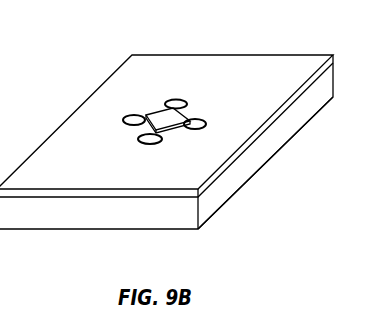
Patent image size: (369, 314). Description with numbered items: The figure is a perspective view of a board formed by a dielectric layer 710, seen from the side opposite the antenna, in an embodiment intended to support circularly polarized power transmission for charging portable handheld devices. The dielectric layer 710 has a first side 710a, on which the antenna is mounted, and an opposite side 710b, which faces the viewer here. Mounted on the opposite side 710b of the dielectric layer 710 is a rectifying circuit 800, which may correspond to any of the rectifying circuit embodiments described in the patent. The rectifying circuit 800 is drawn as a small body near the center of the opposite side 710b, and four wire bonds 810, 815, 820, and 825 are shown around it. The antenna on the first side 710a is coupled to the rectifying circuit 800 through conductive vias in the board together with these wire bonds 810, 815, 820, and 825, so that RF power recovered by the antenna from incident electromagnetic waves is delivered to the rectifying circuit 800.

The dielectric layer 710 is at (93, 219).
The first side 710a is at (254, 177).
The opposite side 710b is at (267, 65).
The rectifying circuit 800 is at (177, 134).
The wire bond 810 is at (137, 116).
The wire bond 815 is at (178, 101).
The wire bond 820 is at (204, 121).
The wire bond 825 is at (149, 145).